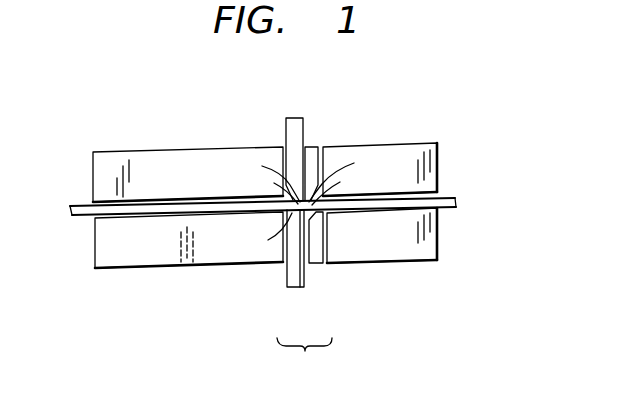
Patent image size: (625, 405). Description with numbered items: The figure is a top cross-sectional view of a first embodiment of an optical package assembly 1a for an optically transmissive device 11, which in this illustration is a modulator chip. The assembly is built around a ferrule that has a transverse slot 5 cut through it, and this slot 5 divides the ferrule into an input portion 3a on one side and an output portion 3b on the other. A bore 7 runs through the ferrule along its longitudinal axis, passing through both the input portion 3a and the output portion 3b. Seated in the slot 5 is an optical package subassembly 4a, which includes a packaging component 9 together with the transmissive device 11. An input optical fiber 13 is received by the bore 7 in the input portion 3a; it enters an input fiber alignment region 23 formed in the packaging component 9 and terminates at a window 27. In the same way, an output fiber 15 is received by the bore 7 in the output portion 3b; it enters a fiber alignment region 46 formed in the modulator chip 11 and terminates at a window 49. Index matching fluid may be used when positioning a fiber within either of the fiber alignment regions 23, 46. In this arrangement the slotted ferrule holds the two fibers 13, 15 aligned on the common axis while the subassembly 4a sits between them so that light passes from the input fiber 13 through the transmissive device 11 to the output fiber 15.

The optical package assembly 1a is at (402, 64).
The input portion 3a is at (186, 162).
The output portion 3b is at (403, 158).
The slot 5 is at (315, 126).
The bore 7 is at (83, 200).
The packaging component 9 is at (291, 283).
The transmissive device 11 is at (317, 264).
The input optical fiber 13 is at (78, 215).
The output fiber 15 is at (458, 207).
The input fiber alignment region 23 is at (284, 223).
The window 27 is at (274, 181).
The fiber alignment region 46 is at (331, 221).
The window 49 is at (340, 182).
The optical package subassembly 4a is at (304, 360).